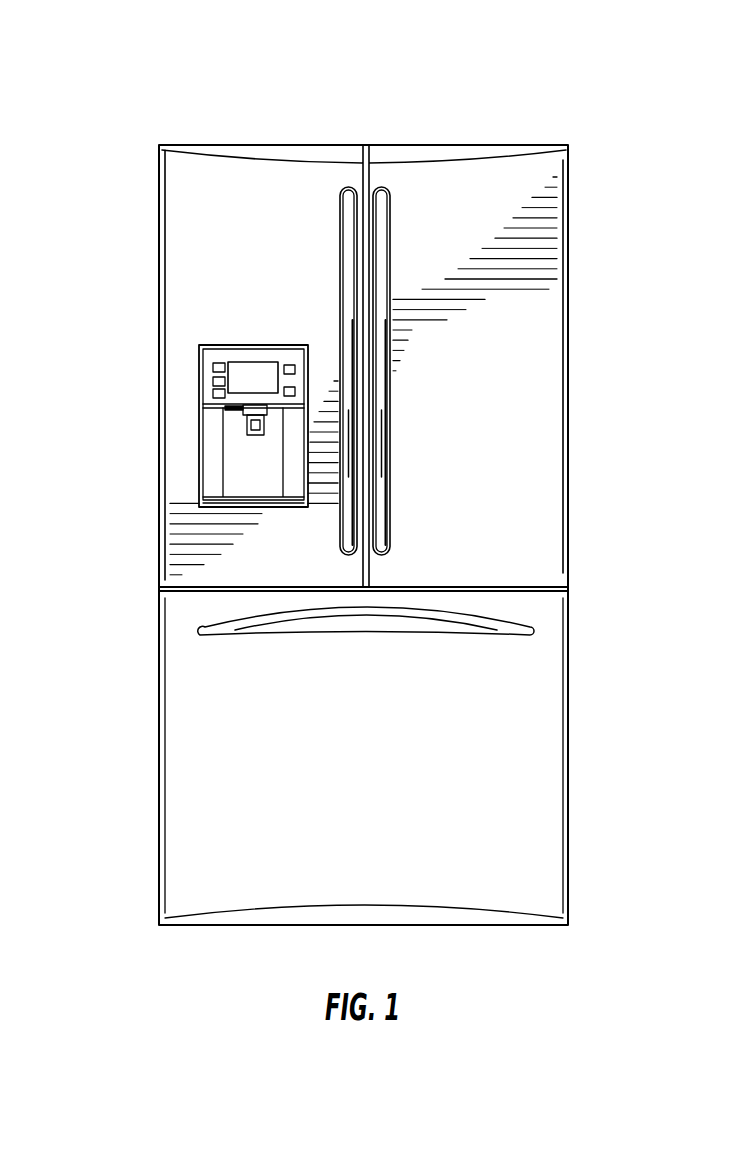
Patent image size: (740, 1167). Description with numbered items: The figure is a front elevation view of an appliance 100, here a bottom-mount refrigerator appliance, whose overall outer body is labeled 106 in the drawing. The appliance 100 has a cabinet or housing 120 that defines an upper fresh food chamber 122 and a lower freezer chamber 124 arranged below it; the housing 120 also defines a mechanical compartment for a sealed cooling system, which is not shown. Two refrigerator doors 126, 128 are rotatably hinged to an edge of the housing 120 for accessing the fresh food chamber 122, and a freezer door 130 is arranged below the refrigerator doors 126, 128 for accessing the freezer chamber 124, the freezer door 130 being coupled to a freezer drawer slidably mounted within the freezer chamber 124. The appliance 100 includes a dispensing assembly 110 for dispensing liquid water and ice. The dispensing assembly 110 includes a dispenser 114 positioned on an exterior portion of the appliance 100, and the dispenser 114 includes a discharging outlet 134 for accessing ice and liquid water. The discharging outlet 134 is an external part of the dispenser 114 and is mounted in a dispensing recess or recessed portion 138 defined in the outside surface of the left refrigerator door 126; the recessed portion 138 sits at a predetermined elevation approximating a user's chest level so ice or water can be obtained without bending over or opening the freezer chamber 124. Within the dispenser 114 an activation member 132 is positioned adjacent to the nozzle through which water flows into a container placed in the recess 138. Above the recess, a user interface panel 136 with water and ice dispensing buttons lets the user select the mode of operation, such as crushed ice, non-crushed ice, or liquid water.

The appliance 100 is at (345, 465).
The cabinet 106 is at (575, 146).
The dispensing assembly 110 is at (170, 481).
The dispenser 114 is at (253, 482).
The housing 120 is at (366, 735).
The fresh food chamber 122 is at (345, 366).
The freezer chamber 124 is at (558, 633).
The refrigerator door 126 is at (182, 253).
The refrigerator door 128 is at (540, 243).
The freezer door 130 is at (555, 720).
The activation member 132 is at (245, 416).
The discharging outlet 134 is at (243, 409).
The user interface panel 136 is at (207, 383).
The recessed portion 138 is at (275, 490).